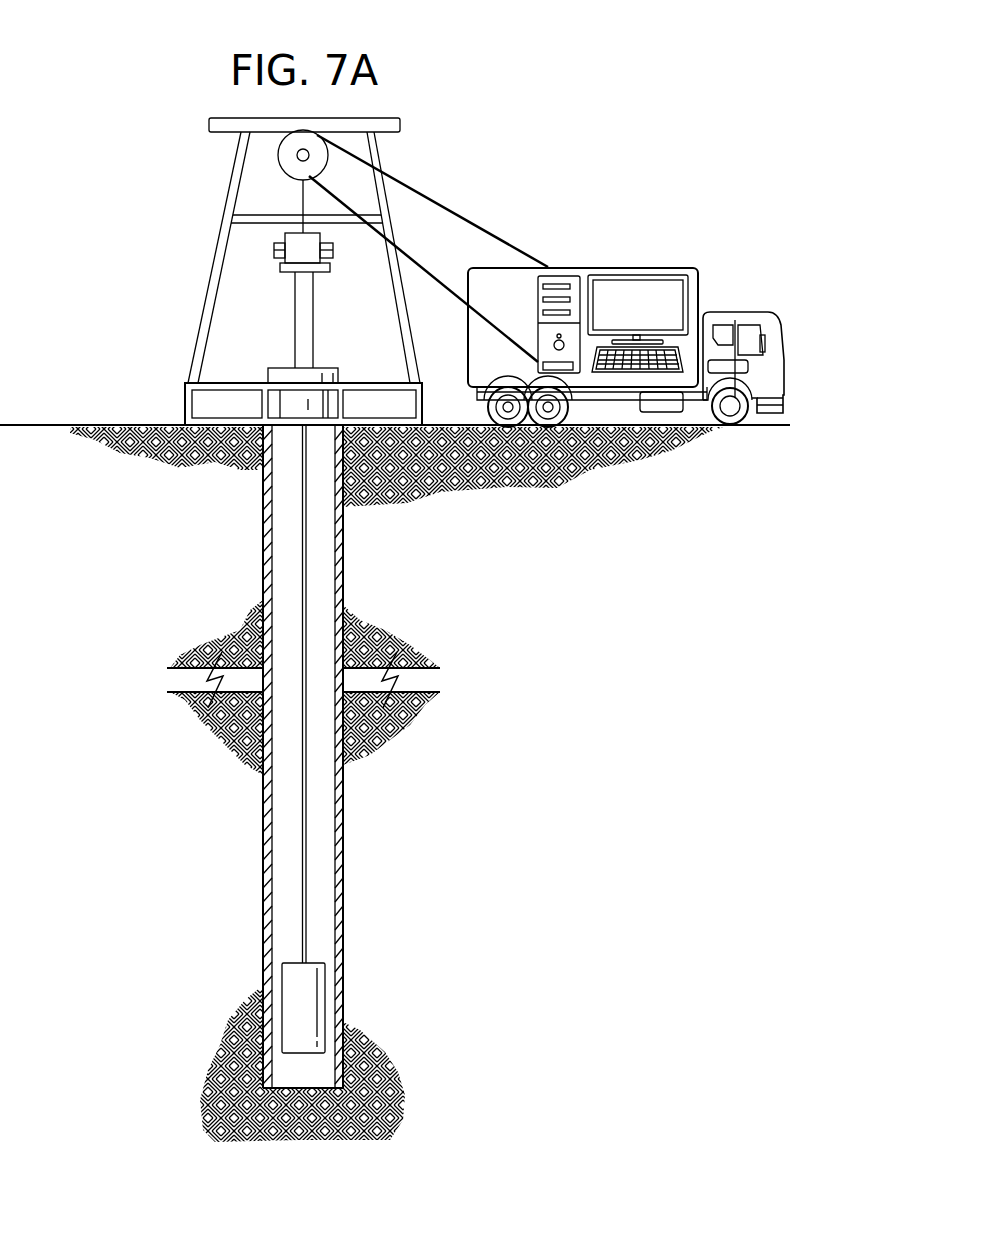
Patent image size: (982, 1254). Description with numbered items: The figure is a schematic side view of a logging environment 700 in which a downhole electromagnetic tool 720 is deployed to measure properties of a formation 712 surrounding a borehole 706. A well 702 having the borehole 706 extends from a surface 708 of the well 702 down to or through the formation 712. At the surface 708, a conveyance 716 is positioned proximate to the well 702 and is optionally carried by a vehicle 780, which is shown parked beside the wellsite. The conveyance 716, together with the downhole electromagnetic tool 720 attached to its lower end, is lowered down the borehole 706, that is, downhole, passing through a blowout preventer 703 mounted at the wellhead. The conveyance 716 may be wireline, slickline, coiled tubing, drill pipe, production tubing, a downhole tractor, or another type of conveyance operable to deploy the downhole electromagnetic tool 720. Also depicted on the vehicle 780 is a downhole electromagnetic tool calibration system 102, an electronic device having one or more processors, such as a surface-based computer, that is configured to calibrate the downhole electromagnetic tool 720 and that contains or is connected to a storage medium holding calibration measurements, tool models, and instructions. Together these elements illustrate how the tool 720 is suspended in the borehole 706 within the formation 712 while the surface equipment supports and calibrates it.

The logging environment 700 is at (125, 86).
The well 702 is at (330, 358).
The blowout preventer 703 is at (295, 330).
The borehole 706 is at (339, 575).
The surface 708 is at (123, 425).
The formation 712 is at (490, 903).
The conveyance 716 is at (302, 915).
The downhole electromagnetic tool 720 is at (325, 1002).
The downhole electromagnetic tool calibration system 102 is at (560, 277).
The vehicle 780 is at (615, 268).